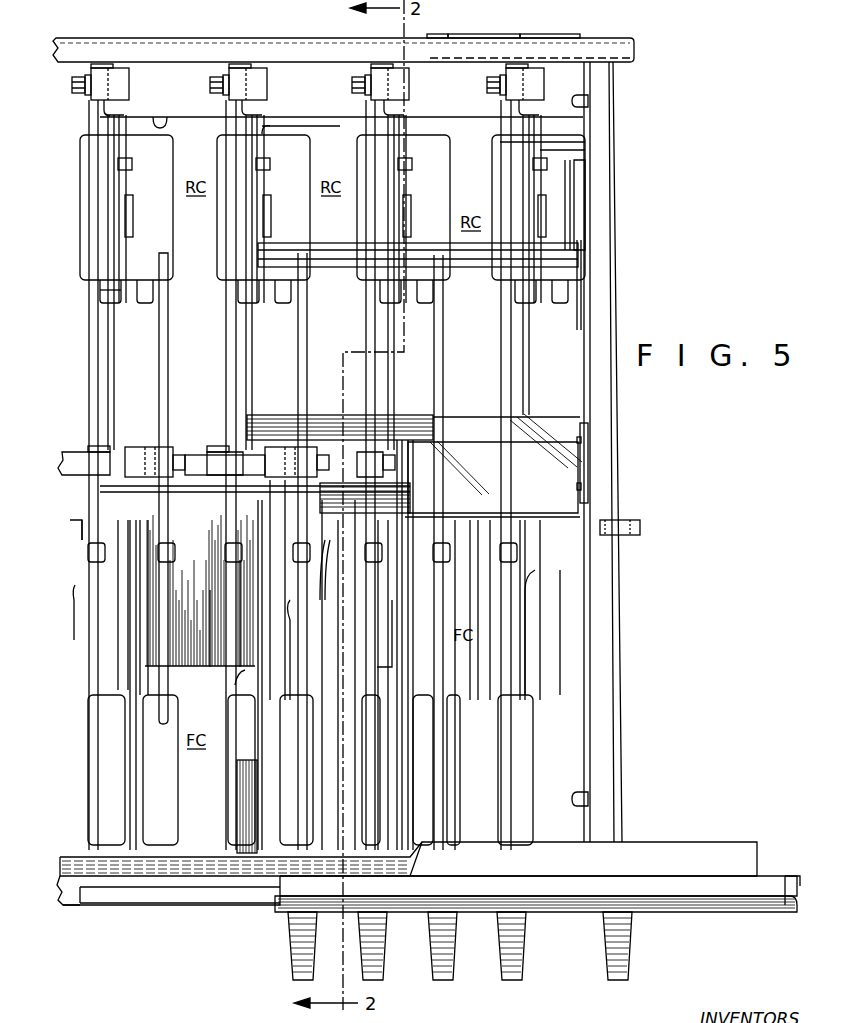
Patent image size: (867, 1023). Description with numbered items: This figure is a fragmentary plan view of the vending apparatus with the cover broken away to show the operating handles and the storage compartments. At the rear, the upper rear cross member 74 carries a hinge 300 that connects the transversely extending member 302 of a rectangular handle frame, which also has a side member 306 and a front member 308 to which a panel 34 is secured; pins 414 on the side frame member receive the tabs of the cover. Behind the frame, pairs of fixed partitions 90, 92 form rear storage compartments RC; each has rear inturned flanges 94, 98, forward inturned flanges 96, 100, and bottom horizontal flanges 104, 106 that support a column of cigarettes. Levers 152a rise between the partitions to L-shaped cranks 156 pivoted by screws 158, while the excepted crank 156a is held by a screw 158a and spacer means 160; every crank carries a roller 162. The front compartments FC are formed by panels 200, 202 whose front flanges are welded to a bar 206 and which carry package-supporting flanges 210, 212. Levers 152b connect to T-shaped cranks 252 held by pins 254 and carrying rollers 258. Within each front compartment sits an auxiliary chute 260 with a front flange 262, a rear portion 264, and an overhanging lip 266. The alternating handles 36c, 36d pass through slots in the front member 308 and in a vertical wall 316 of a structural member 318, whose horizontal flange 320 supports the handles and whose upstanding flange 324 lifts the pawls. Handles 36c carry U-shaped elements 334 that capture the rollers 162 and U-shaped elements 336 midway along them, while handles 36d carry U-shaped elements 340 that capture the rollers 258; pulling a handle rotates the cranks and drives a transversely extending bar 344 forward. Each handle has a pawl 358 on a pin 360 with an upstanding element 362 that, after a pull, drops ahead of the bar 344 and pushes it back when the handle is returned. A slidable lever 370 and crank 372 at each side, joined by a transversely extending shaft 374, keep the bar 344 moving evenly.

The panel 34 is at (280, 905).
The handle 36c is at (88, 368).
The handle 36d is at (170, 362).
The upper rear cross member 74 is at (312, 74).
The partition 90 is at (272, 126).
The partition 92 is at (108, 236).
The rear inturned flange 94 is at (162, 117).
The forward inturned flange 96 is at (148, 302).
The rear inturned flange 98 is at (104, 122).
The forward inturned flange 100 is at (100, 290).
The horizontal flange 104 is at (150, 168).
The horizontal flange 106 is at (218, 270).
The lever 152a is at (124, 213).
The lever 152b is at (128, 758).
The L-shaped crank 156 is at (270, 156).
The L-shaped crank 156a is at (600, 140).
The screw 158 is at (117, 166).
The screw 158a is at (590, 152).
The spacer means 160 is at (586, 180).
The roller 162 is at (113, 72).
The panel 200 is at (135, 845).
The panel 202 is at (118, 845).
The transversely extending bar 206 is at (72, 890).
The horizontal package-supporting flange 210 is at (172, 782).
The horizontal package-supporting flange 212 is at (236, 790).
The T-shaped crank 252 is at (292, 600).
The pin 254 is at (130, 510).
The roller 258 is at (138, 448).
The auxiliary chute 260 is at (530, 622).
The flange 262 is at (240, 700).
The rear portion 264 is at (211, 525).
The overhanging lip 266 is at (196, 452).
The hinge 300 is at (510, 36).
The transversely extending member 302 is at (180, 50).
The side member 306 is at (616, 692).
The front member 308 is at (680, 856).
The vertical wall 316 is at (392, 430).
The transversely extending structural member 318 is at (578, 470).
The horizontal flange 320 is at (467, 418).
The upstanding flange 324 is at (600, 510).
The U-shaped element 334 is at (104, 70).
The U-shaped element 336 is at (90, 450).
The U-shaped element 340 is at (165, 446).
The transversely extending bar 344 is at (326, 545).
The pawl 358 is at (88, 550).
The pin 360 is at (76, 575).
The upstanding element 362 is at (82, 524).
The slidable lever 370 is at (587, 198).
The crank 372 is at (576, 262).
The transversely extending shaft 374 is at (476, 270).
The pin 414 is at (588, 100).